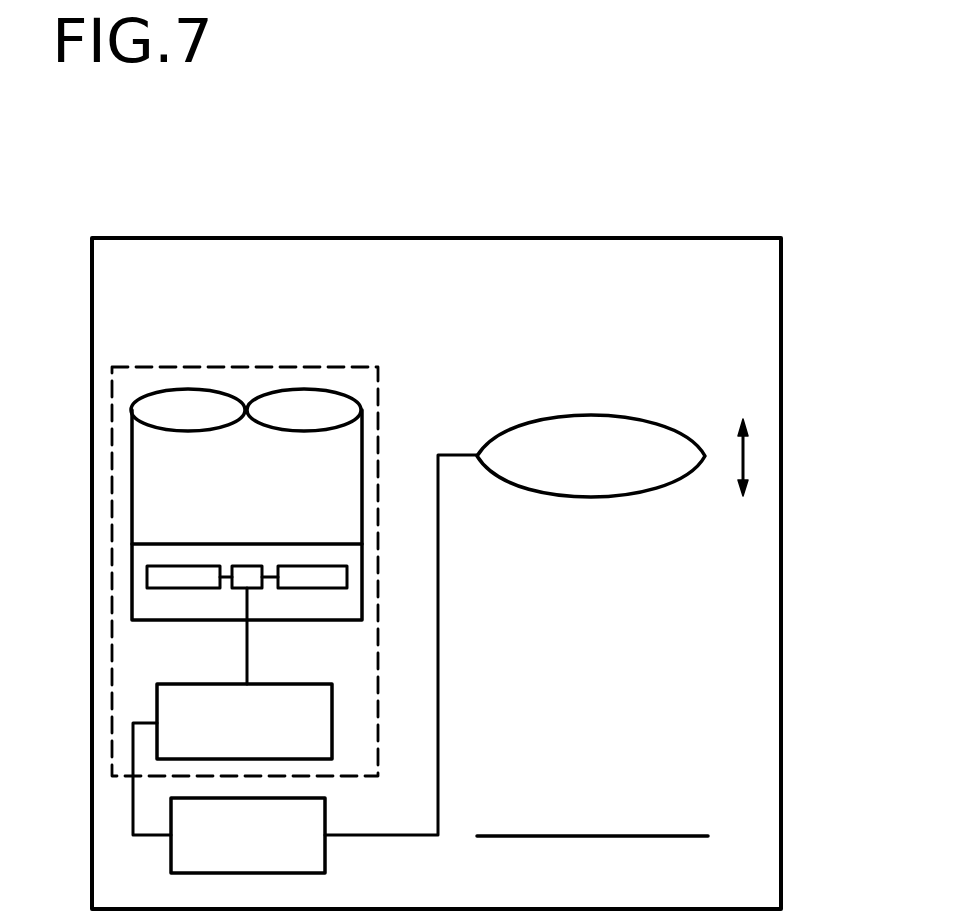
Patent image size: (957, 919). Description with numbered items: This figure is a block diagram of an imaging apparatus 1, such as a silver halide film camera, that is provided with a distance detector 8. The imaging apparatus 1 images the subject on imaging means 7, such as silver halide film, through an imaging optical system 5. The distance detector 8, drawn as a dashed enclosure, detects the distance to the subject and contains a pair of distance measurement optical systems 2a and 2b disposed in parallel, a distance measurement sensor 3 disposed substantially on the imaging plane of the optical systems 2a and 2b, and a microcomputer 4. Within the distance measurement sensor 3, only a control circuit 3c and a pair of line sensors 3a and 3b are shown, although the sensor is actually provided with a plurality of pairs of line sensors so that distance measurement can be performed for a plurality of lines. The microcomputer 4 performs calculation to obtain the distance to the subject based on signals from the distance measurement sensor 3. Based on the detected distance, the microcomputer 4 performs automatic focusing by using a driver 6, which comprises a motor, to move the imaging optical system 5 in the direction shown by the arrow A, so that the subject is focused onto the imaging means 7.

The imaging apparatus 1 is at (732, 262).
The distance measurement optical system 2a is at (177, 388).
The distance measurement optical system 2b is at (308, 388).
The distance measurement sensor 3 is at (347, 604).
The line sensor 3a is at (197, 590).
The line sensor 3b is at (317, 590).
The control circuit 3c is at (243, 566).
The microcomputer 4 is at (332, 732).
The imaging optical system 5 is at (635, 417).
The driver 6 is at (325, 853).
The imaging means 7 is at (659, 836).
The distance detector 8 is at (127, 690).
The arrow A is at (748, 450).